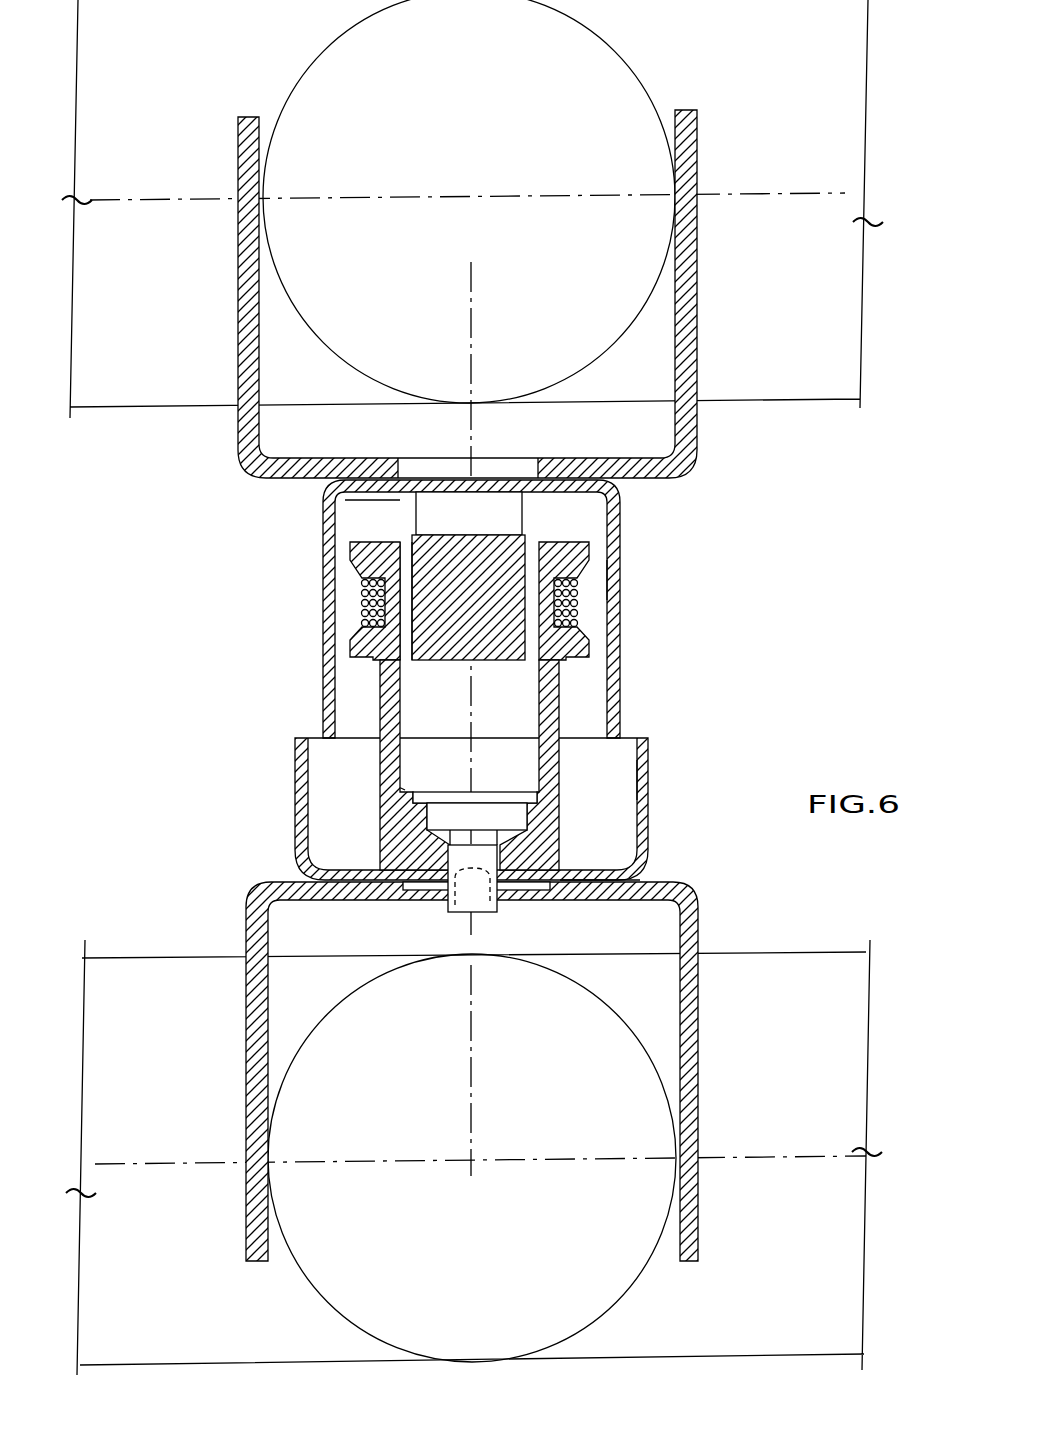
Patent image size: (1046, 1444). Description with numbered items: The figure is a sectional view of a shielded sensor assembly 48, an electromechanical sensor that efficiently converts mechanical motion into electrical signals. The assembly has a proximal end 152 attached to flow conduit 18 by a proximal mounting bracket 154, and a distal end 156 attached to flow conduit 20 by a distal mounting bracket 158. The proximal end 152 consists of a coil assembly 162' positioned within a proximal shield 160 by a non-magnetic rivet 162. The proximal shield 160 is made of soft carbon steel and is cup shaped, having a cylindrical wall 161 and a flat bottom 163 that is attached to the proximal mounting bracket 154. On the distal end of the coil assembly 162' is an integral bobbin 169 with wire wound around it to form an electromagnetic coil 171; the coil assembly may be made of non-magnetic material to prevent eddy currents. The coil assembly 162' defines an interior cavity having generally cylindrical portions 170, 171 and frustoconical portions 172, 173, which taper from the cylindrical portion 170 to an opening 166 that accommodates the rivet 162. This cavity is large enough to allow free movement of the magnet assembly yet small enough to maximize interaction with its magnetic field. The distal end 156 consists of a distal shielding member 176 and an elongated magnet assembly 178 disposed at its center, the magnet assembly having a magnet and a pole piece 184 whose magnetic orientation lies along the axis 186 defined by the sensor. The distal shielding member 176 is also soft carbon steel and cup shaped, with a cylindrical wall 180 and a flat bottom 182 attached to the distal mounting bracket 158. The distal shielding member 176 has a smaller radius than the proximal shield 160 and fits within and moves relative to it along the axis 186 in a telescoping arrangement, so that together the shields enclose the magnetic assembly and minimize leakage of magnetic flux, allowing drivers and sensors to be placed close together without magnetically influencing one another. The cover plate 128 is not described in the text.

The flow conduit 18 is at (664, 1055).
The flow conduit 20 is at (659, 291).
The shielded sensor assembly 48 is at (237, 628).
The cover plate 128 is at (612, 500).
The proximal end 152 is at (198, 848).
The proximal mounting bracket 154 is at (692, 889).
The distal end 156 is at (215, 557).
The distal mounting bracket 158 is at (694, 451).
The proximal shield 160 is at (296, 780).
The cylindrical wall 161 is at (648, 763).
The non-magnetic rivet 162 is at (461, 900).
The coil assembly 162' is at (584, 765).
The flat bottom 163 is at (622, 872).
The opening 166 is at (545, 850).
The integral bobbin 169 is at (597, 640).
The cylindrical portion 170 is at (566, 712).
The electromagnetic coil 171 is at (362, 607).
The frustoconical portion 172 is at (386, 772).
The frustoconical portion 173 is at (402, 810).
The distal shielding member 176 is at (622, 542).
The magnet assembly 178 is at (437, 573).
The cylindrical wall 180 is at (619, 580).
The flat bottom 182 is at (400, 512).
The pole piece 184 is at (411, 588).
The axis 186 is at (470, 717).